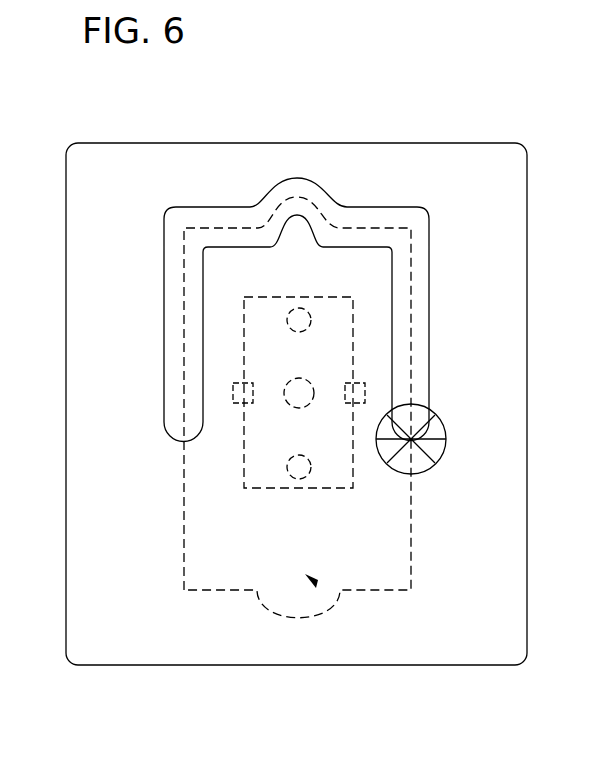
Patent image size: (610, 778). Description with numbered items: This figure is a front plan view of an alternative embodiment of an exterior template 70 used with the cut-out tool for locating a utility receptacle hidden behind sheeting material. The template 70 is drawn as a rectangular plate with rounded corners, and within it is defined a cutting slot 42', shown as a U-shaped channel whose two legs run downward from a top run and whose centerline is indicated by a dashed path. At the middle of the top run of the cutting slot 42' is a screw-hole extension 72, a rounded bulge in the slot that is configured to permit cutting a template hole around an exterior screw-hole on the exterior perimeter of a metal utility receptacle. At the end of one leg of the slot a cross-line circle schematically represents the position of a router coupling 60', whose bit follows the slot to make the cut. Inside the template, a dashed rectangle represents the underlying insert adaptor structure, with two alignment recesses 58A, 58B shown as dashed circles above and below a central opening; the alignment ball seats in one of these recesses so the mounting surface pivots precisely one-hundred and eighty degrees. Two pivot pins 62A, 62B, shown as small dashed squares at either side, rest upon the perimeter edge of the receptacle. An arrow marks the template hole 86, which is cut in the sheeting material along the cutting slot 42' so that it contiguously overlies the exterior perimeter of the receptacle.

The exterior template 70 is at (443, 143).
The screw-hole extension 72 is at (308, 196).
The cutting slot 42' is at (369, 407).
The router coupling 60' is at (475, 423).
The alignment recess 58A is at (287, 318).
The alignment recess 58B is at (289, 476).
The pivot pin 62A is at (229, 401).
The pivot pin 62B is at (367, 389).
The template hole 86 is at (312, 583).